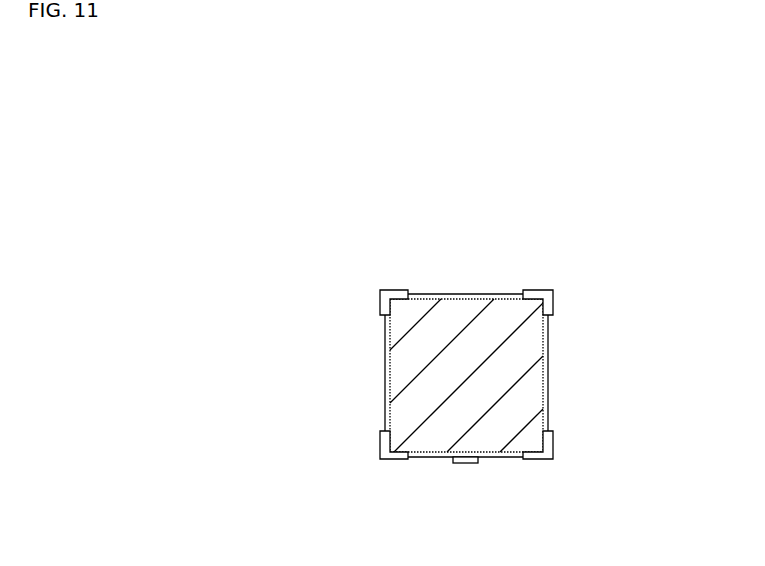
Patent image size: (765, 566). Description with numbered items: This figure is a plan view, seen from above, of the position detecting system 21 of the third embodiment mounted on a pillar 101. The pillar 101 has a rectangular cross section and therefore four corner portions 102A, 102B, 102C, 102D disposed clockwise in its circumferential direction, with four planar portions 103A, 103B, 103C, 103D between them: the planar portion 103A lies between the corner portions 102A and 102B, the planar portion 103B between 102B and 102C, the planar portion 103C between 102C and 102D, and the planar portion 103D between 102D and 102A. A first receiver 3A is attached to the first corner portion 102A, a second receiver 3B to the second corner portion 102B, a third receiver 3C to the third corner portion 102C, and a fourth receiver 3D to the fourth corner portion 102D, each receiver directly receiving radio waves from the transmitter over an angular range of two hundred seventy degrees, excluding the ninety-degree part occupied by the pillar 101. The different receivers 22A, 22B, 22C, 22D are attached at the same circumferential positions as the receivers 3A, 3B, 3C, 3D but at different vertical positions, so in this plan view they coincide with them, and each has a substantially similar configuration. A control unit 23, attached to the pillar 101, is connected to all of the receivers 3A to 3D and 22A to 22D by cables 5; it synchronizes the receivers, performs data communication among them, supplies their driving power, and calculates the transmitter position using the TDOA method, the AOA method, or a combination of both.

The position detecting system 21 is at (635, 231).
The pillar 101 is at (441, 311).
The planar portion 103A is at (479, 296).
The planar portion 103B is at (546, 358).
The planar portion 103C is at (432, 457).
The planar portion 103D is at (387, 357).
The first corner portion 102A is at (387, 270).
The second corner portion 102B is at (548, 303).
The third corner portion 102C is at (550, 446).
The fourth corner portion 102D is at (392, 445).
The first receiver 3A is at (349, 279).
The second receiver 3B is at (583, 281).
The third receiver 3C is at (584, 469).
The fourth receiver 3D is at (349, 468).
The different receiver 22A is at (349, 302).
The different receiver 22B is at (583, 302).
The different receiver 22C is at (584, 446).
The different receiver 22D is at (349, 444).
The cable 5 is at (467, 416).
The control unit 23 is at (467, 463).